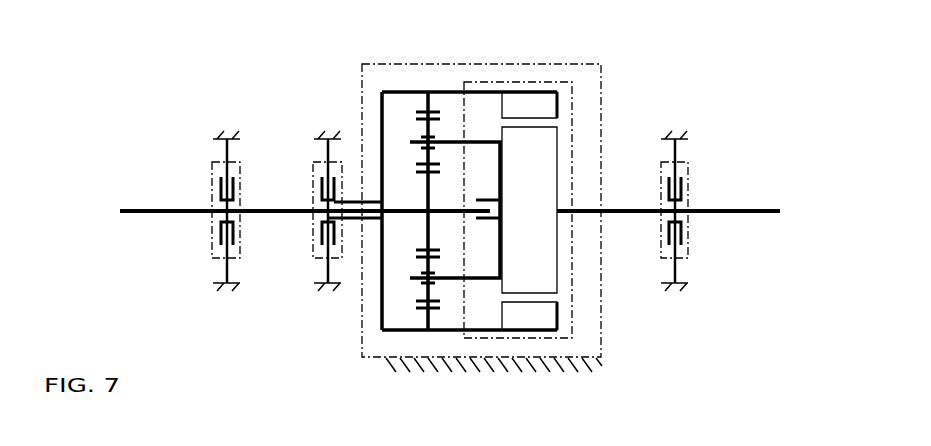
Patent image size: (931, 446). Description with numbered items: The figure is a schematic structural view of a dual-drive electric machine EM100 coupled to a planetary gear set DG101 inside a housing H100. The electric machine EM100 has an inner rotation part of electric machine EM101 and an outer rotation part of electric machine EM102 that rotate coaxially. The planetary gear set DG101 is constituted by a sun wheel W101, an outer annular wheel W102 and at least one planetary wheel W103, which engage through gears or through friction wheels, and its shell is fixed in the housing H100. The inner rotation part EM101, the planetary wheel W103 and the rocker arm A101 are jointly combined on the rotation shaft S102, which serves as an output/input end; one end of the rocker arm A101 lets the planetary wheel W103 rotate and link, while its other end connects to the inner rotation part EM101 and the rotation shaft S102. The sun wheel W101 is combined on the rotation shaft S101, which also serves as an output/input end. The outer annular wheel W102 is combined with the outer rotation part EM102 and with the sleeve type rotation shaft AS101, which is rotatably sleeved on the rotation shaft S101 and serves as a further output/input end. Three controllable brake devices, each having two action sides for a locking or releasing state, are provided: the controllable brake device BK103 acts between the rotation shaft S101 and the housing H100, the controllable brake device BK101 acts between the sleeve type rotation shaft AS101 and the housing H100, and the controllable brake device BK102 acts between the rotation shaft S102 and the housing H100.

The rotation shaft S101 is at (160, 208).
The rotation shaft S102 is at (727, 208).
The controllable brake device BK101 is at (313, 175).
The controllable brake device BK102 is at (688, 172).
The controllable brake device BK103 is at (212, 175).
The sleeve type rotation shaft AS101 is at (353, 201).
The sun wheel W101 is at (416, 249).
The outer annular wheel W102 is at (415, 111).
The planetary wheel W103 is at (441, 304).
The rocker arm A101 is at (479, 140).
The planetary gear set DG101 is at (601, 87).
The dual-drive electric machine EM100 is at (500, 81).
The inner rotation part of electric machine EM101 is at (540, 165).
The outer rotation part of electric machine EM102 is at (548, 316).
The housing H100 is at (710, 324).